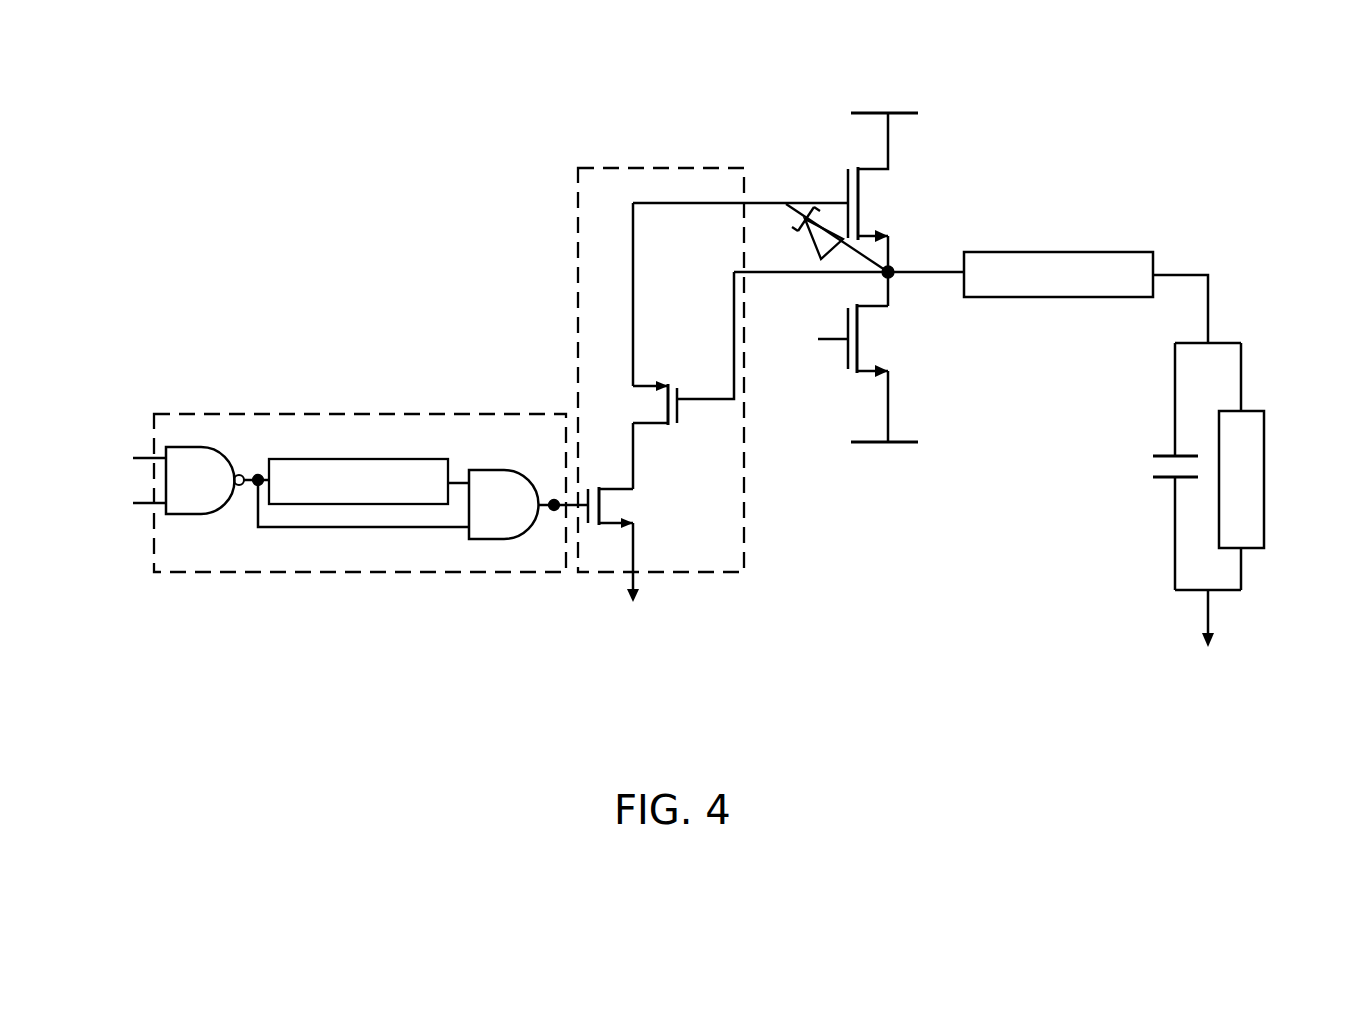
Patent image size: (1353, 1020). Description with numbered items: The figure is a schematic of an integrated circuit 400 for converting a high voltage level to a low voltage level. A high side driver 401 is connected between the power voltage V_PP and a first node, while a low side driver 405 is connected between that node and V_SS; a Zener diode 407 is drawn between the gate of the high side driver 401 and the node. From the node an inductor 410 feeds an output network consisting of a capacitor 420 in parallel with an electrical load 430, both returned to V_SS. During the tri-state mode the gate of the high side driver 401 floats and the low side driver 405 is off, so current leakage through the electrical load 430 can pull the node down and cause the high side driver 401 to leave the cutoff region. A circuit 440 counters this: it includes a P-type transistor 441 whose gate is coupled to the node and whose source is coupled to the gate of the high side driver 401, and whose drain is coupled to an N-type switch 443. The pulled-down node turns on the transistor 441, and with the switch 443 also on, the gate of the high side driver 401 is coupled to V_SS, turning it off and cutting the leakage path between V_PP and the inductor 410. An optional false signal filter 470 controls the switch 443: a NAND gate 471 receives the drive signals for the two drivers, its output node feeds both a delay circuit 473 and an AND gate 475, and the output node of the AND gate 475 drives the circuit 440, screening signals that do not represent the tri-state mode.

The integrated circuit 400 is at (1139, 195).
The high side driver 401 is at (902, 203).
The low side driver 405 is at (901, 341).
The Zener diode 407 is at (810, 256).
The inductor 410 is at (1058, 274).
The capacitor 420 is at (1131, 463).
The electrical load 430 is at (1263, 461).
The circuit 440 is at (743, 530).
The transistor 441 is at (634, 407).
The switch 443 is at (649, 502).
The false signal filter 470 is at (322, 413).
The NAND gate 471 is at (177, 513).
The delay circuit 473 is at (358, 481).
The AND gate 475 is at (478, 538).